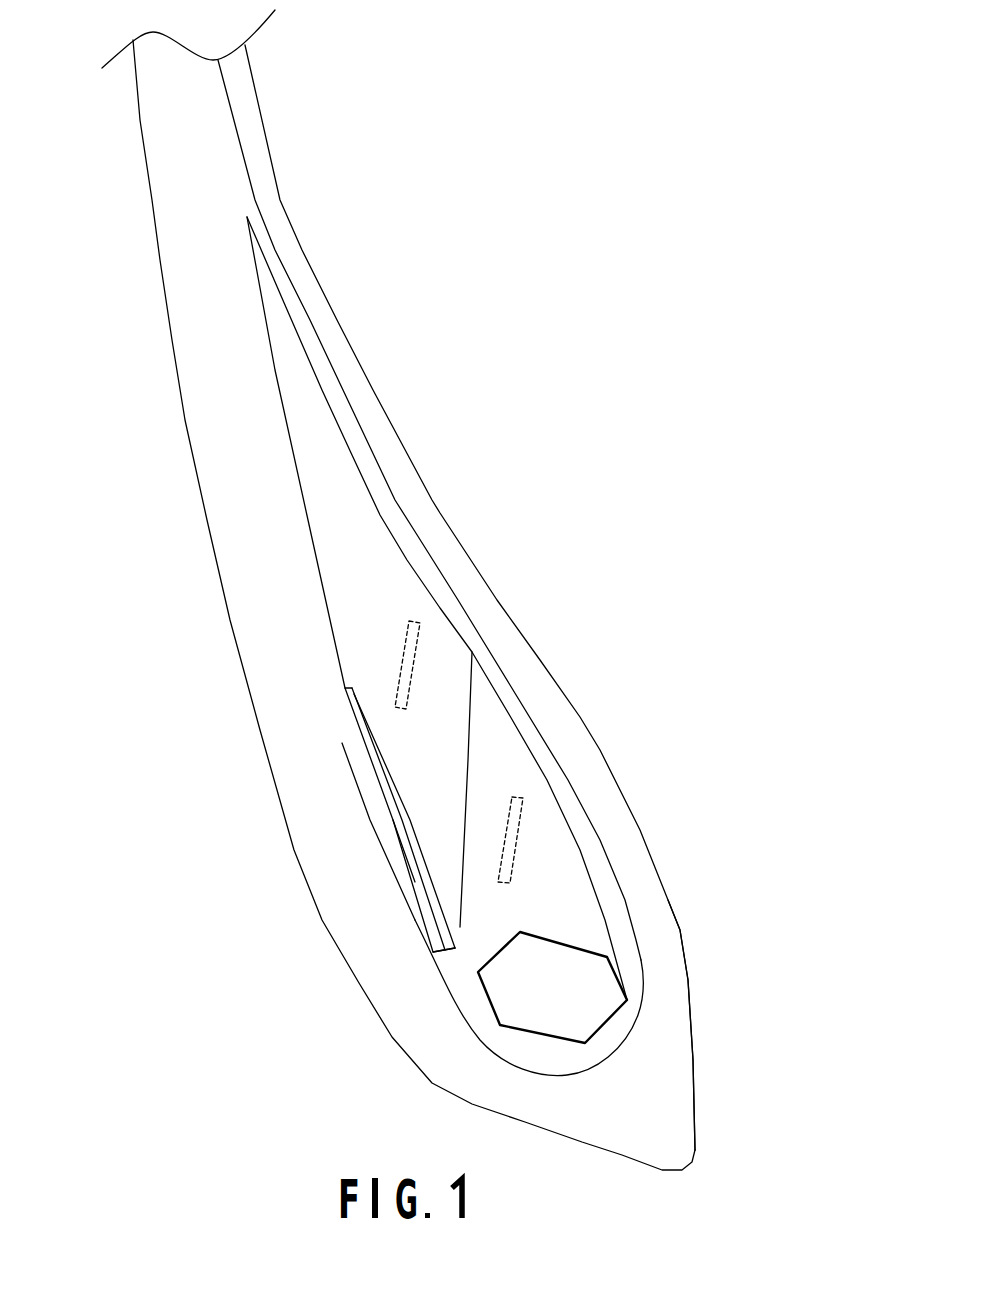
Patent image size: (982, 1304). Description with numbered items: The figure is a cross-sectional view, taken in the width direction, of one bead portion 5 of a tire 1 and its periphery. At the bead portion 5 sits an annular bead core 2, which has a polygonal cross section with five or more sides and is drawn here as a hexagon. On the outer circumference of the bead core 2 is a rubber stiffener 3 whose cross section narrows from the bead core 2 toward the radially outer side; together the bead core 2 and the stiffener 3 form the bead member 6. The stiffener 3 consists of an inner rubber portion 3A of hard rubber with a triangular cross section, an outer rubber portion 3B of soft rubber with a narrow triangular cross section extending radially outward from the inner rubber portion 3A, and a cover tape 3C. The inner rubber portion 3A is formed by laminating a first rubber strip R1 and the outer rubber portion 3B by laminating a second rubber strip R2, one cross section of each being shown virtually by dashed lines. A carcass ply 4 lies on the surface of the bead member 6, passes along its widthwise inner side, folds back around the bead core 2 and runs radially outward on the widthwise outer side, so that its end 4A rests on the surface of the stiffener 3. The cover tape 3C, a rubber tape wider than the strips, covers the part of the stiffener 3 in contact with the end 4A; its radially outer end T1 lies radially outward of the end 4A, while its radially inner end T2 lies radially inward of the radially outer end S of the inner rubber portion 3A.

The tire 1 is at (140, 375).
The bead core 2 is at (595, 1007).
The stiffener 3 is at (457, 647).
The inner rubber portion 3A is at (547, 863).
The outer rubber portion 3B is at (360, 598).
The cover tape 3C is at (395, 848).
The carcass ply 4 is at (237, 127).
The end of the carcass ply 4A is at (372, 818).
The bead portion 5 is at (697, 925).
The bead member 6 is at (593, 937).
The first rubber strip R1 is at (518, 823).
The second rubber strip R2 is at (403, 662).
The radially outer end of the cover tape T1 is at (345, 688).
The radially inner end of the cover tape T2 is at (450, 952).
The radially outer end of the inner rubber portion S is at (455, 950).